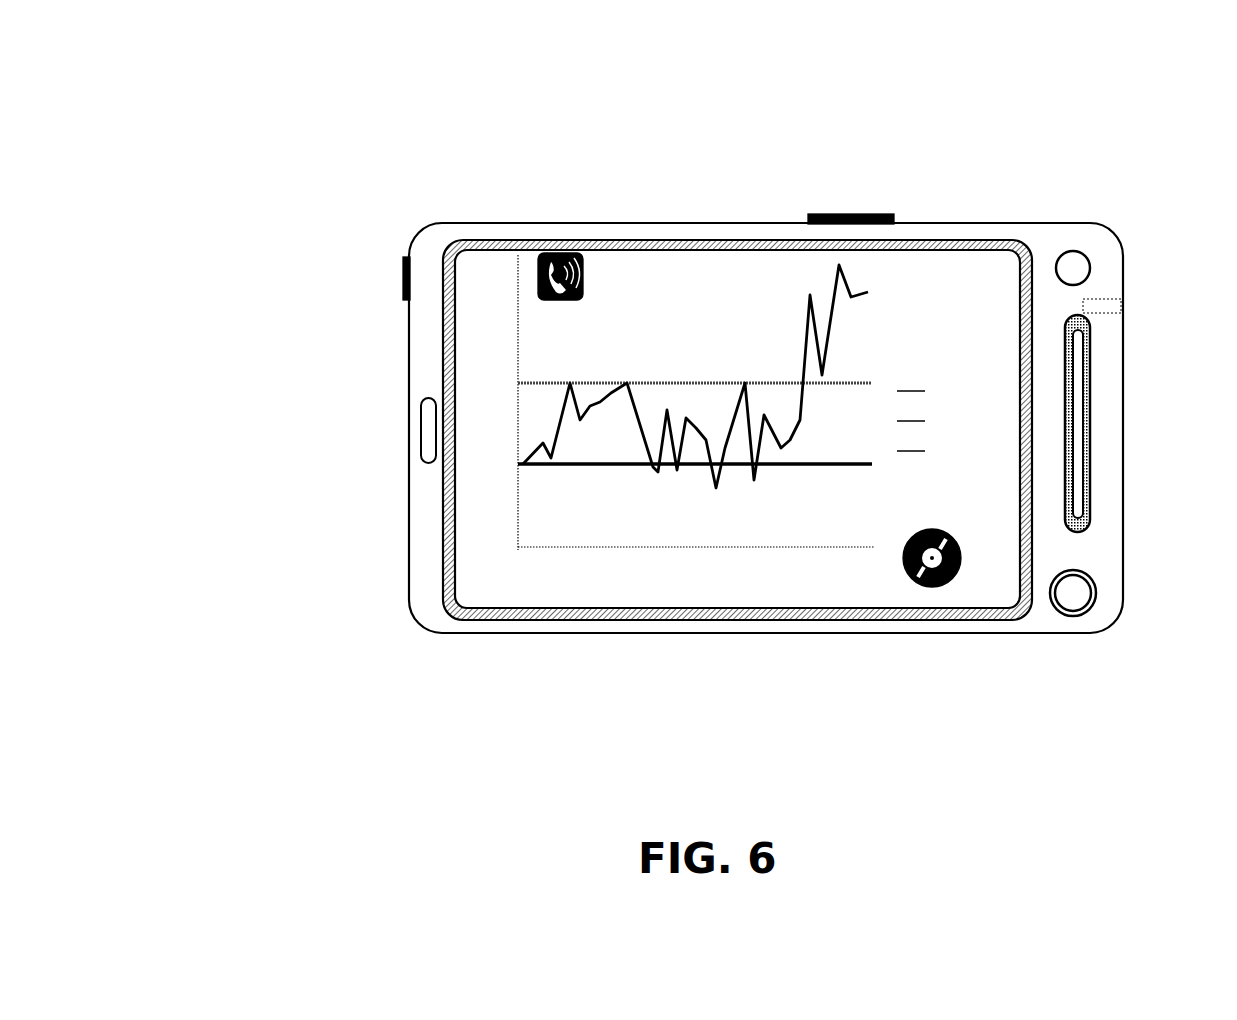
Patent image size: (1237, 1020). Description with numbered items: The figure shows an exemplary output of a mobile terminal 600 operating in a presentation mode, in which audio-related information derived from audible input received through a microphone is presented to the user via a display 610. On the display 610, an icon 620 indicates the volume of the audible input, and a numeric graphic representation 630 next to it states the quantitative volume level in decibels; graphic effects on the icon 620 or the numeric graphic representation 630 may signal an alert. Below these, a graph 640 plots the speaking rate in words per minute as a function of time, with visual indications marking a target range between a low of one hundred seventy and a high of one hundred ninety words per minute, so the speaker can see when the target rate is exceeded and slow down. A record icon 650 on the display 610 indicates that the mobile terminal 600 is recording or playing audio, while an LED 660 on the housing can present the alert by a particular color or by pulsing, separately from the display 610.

The mobile terminal 600 is at (287, 125).
The display 610 is at (775, 250).
The icon 620 is at (598, 250).
The numeric graphic representation 630 is at (683, 275).
The graph 640 is at (472, 320).
The record icon 650 is at (956, 602).
The LED 660 is at (1100, 577).